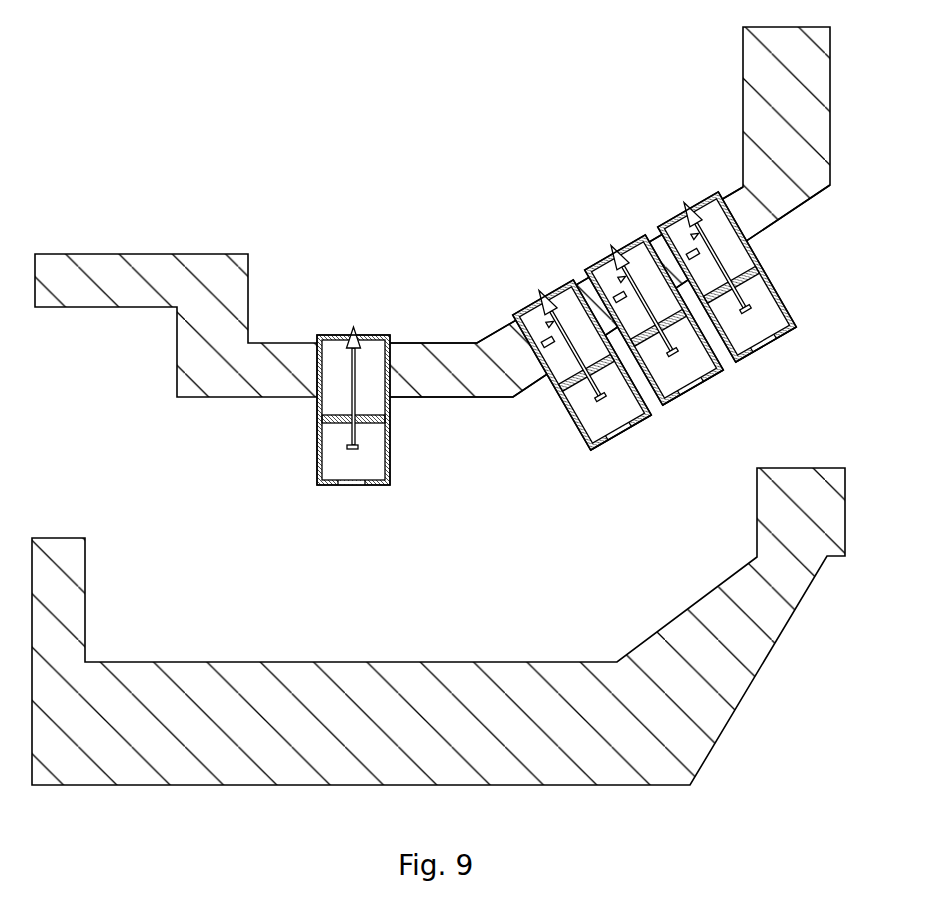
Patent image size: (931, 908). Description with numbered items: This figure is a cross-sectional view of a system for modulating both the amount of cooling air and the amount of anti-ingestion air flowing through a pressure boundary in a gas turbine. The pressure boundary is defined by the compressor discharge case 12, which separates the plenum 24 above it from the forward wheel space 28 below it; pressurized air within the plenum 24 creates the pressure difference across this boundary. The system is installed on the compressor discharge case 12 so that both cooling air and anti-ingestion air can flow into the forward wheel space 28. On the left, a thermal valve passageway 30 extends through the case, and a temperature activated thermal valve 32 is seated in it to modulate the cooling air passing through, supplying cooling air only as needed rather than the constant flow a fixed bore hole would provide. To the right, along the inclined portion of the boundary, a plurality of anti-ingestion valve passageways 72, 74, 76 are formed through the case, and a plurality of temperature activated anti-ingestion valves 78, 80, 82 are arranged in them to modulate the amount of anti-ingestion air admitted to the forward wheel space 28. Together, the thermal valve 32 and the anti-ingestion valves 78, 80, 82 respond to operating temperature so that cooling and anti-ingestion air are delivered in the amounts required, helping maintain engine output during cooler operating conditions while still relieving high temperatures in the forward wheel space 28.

The compressor discharge case 12 is at (195, 343).
The plenum 24 is at (399, 133).
The forward wheel space 28 is at (501, 557).
The thermal valve passageway 30 is at (395, 375).
The temperature activated thermal valve 32 is at (317, 467).
The anti-ingestion valve passageway 72 is at (545, 372).
The anti-ingestion valve passageway 74 is at (573, 283).
The anti-ingestion valve passageway 76 is at (733, 222).
The temperature activated anti-ingestion valve 78 is at (594, 454).
The temperature activated anti-ingestion valve 80 is at (680, 395).
The temperature activated anti-ingestion valve 82 is at (752, 353).